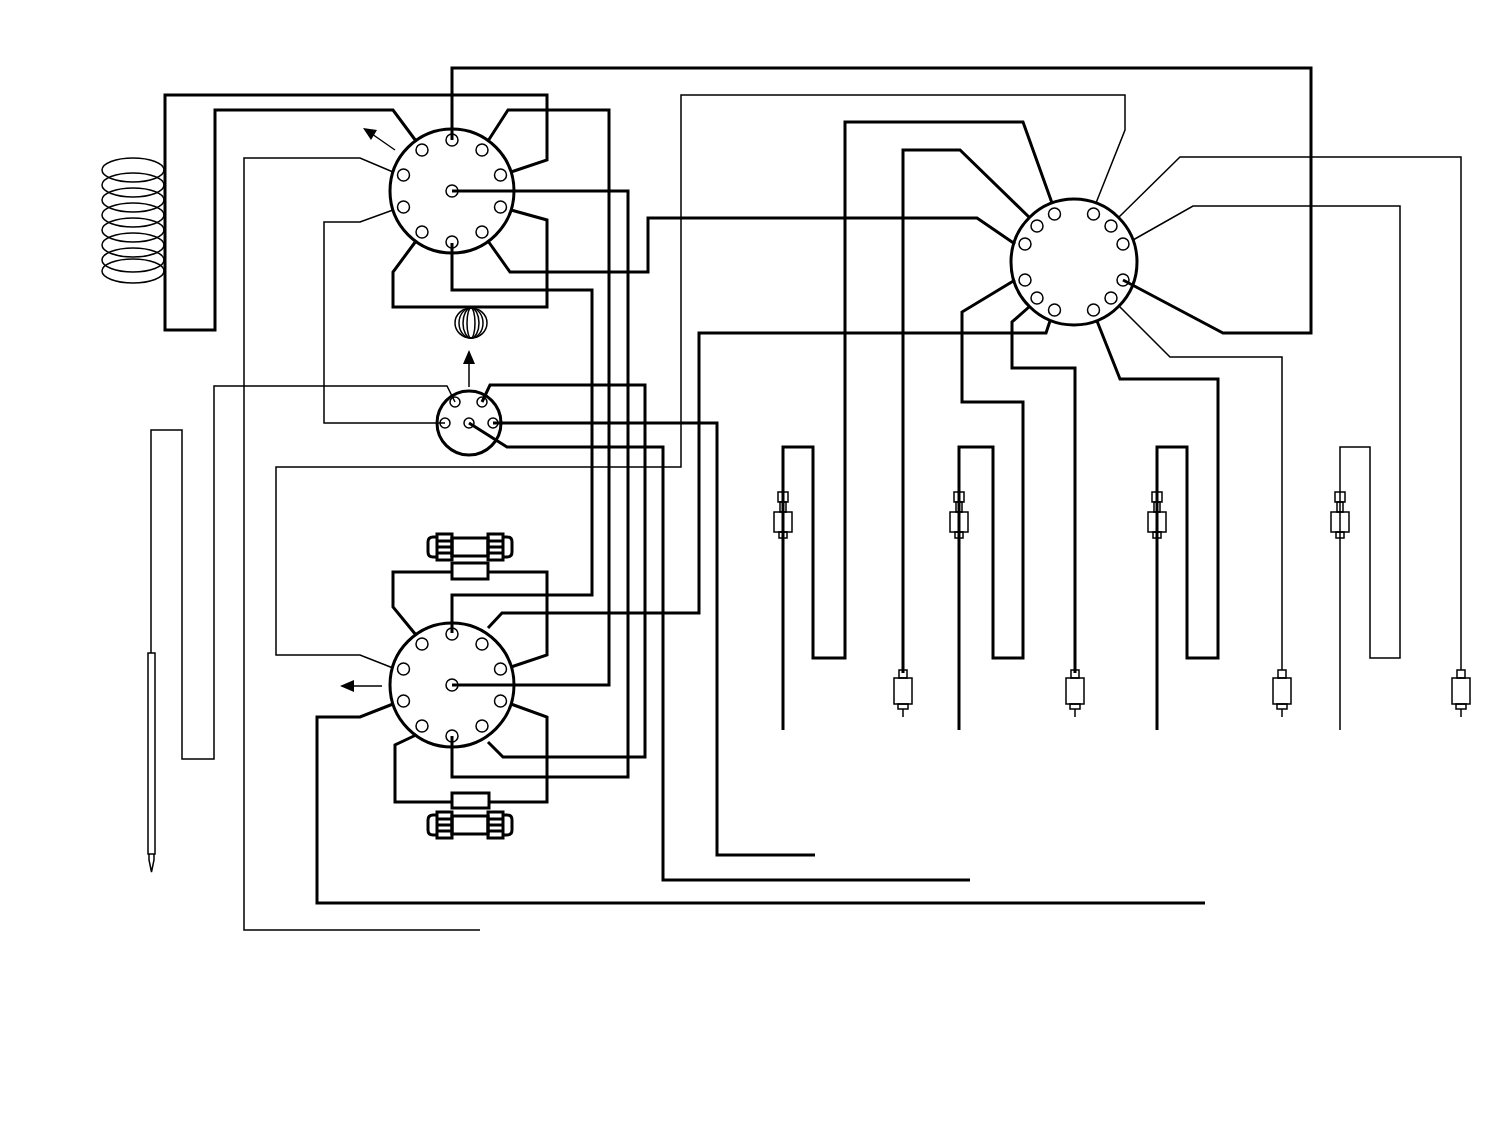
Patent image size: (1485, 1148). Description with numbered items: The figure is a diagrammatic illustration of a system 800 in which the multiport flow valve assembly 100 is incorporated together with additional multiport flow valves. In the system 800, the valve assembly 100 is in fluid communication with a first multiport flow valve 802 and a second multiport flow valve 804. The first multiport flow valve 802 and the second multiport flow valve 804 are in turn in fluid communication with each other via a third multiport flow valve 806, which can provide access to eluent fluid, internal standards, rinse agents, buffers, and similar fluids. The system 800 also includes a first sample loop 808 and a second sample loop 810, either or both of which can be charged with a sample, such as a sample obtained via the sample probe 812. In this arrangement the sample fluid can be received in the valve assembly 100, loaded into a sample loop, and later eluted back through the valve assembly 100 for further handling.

The system 800 is at (1376, 101).
The first multiport flow valve 802 is at (348, 86).
The second multiport flow valve 804 is at (254, 842).
The third multiport flow valve 806 is at (1252, 78).
The first sample loop 808 is at (129, 142).
The second sample loop 810 is at (441, 346).
The sample probe 812 is at (160, 830).
The valve assembly 100 is at (206, 408).